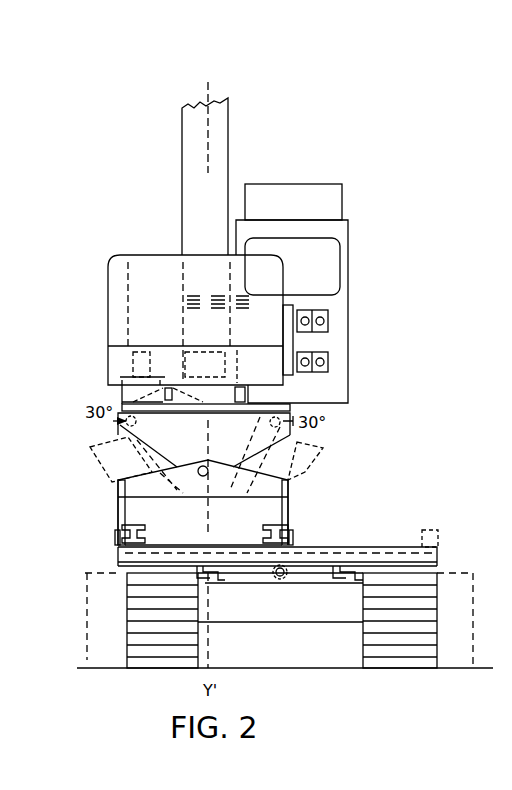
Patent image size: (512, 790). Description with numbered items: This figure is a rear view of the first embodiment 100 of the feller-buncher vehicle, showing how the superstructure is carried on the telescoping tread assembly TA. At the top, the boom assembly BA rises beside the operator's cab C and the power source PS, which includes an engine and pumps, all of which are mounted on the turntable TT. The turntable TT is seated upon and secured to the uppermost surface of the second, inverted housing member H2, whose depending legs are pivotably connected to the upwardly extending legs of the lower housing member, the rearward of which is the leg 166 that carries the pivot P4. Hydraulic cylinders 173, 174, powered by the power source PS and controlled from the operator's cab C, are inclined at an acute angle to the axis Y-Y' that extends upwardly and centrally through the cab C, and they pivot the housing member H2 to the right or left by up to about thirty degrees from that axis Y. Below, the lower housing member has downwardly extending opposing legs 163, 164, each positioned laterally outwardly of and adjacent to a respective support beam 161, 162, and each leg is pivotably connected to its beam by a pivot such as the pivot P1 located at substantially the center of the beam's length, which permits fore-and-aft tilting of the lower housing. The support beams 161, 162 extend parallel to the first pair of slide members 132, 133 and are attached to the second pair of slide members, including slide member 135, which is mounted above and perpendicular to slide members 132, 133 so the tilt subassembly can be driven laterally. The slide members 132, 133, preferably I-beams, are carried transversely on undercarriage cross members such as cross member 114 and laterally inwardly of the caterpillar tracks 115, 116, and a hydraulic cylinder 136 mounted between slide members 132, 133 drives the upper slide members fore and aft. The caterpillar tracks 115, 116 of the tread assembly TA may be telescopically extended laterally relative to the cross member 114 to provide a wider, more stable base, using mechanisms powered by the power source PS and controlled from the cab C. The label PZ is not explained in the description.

The first embodiment 100 is at (271, 143).
The boom assembly BA is at (179, 140).
The axis Y-Y' Y is at (206, 113).
The operator's cab C is at (331, 232).
The power source PS is at (150, 267).
The turntable TT is at (121, 404).
The hydraulic cylinder 173 is at (150, 442).
The hydraulic cylinder 174 is at (258, 459).
The upwardly extending leg 166 is at (140, 492).
The downwardly extending leg 163 is at (118, 507).
The downwardly extending leg 164 is at (290, 512).
The second inverted housing member H2 is at (223, 477).
The pivot P4 is at (203, 477).
The support beam 162 is at (264, 538).
The support beam 161 is at (155, 540).
The pivot P1 is at (115, 538).
The right rail pivot PZ is at (295, 541).
The slide member 135 is at (368, 547).
The slide member 133 is at (400, 566).
The hydraulic cylinder 136 is at (286, 578).
The undercarriage frame cross member 114 is at (263, 610).
The caterpillar track 115 is at (157, 657).
The caterpillar track 116 is at (390, 657).
The slide member 132 is at (200, 574).
The telescoping tread assembly TA is at (352, 671).